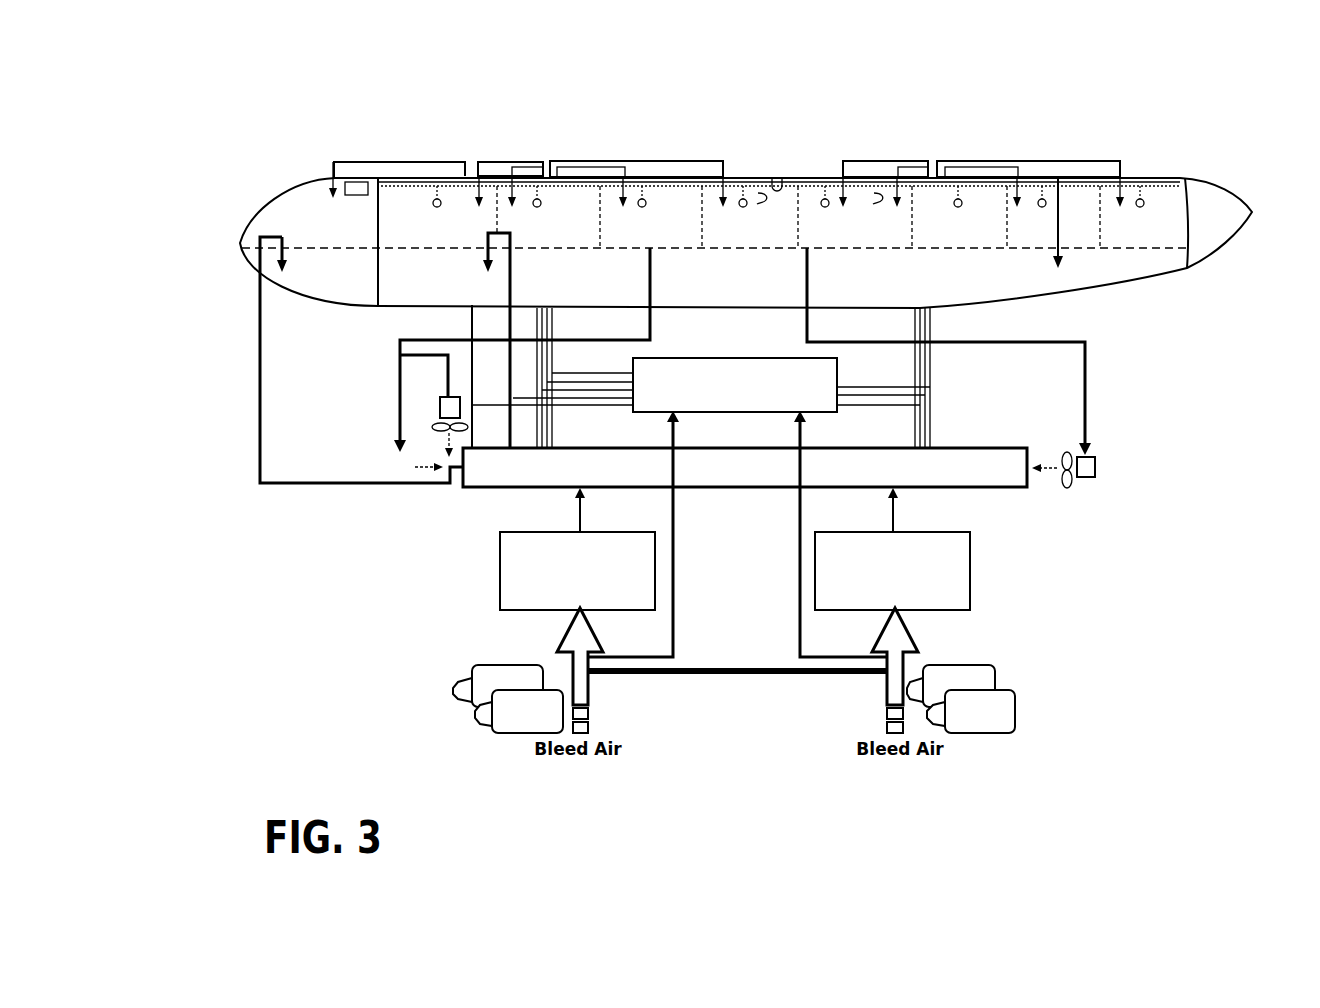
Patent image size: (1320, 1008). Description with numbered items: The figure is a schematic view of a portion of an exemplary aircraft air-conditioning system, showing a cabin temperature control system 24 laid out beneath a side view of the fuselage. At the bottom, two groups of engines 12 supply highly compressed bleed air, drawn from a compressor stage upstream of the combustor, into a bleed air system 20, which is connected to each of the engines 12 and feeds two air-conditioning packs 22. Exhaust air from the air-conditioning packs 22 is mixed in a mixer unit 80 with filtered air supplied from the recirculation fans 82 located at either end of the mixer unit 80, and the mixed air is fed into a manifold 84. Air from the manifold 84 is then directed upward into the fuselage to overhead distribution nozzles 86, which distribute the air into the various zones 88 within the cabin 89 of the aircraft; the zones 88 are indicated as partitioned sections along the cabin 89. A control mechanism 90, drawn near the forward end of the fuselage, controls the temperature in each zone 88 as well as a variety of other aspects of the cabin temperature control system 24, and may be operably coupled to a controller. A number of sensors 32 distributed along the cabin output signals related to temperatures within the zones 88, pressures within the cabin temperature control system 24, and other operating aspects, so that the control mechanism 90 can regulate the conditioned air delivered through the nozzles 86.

The engines 12 is at (513, 720).
The bleed air system 20 is at (848, 683).
The air-conditioning packs 22 is at (500, 577).
The cabin temperature control system 24 is at (343, 156).
The sensors 32 is at (537, 199).
The mixer unit 80 is at (1007, 489).
The recirculation fans 82 is at (437, 407).
The manifold 84 is at (760, 357).
The nozzles 86 is at (723, 199).
The zones 88 is at (760, 191).
The cabin 89 is at (778, 180).
The control mechanism 90 is at (358, 188).